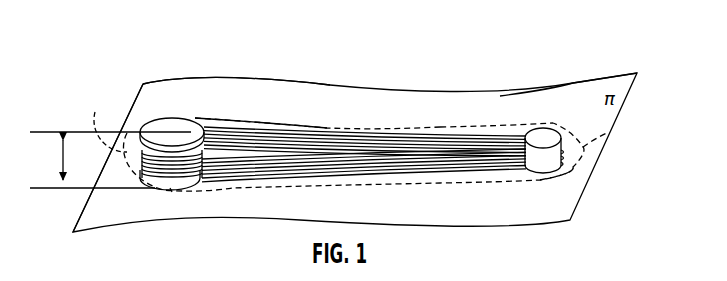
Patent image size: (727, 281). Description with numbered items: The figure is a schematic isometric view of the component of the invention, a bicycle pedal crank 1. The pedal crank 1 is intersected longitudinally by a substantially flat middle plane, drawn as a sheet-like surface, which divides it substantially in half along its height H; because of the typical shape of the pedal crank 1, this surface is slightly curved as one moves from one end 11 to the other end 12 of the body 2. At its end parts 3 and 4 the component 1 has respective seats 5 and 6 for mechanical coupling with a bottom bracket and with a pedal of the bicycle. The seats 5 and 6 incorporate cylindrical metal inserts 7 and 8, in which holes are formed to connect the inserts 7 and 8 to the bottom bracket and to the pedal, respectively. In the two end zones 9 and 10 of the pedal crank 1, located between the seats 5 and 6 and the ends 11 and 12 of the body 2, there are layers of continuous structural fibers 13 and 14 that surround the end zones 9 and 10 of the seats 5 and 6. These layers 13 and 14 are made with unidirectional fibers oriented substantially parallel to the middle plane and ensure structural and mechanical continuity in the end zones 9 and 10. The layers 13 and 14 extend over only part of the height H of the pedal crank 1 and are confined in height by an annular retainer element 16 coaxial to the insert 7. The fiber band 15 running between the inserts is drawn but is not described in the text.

The pedal crank 1 is at (648, 50).
The body 2 is at (328, 128).
The end part 3 is at (168, 52).
The end part 4 is at (588, 72).
The seat 5 is at (215, 110).
The seat 6 is at (530, 118).
The cylindrical metal insert 7 is at (167, 128).
The cylindrical metal insert 8 is at (547, 140).
The end zone 9 is at (143, 128).
The end zone 10 is at (567, 178).
The end 11 is at (106, 125).
The end 12 is at (607, 133).
The layer of continuous structural fibers 13 is at (153, 177).
The layer of continuous structural fibers 14 is at (535, 175).
The elastic band 15 is at (327, 170).
The annular retainer element 16 is at (173, 190).
The height H is at (62, 158).